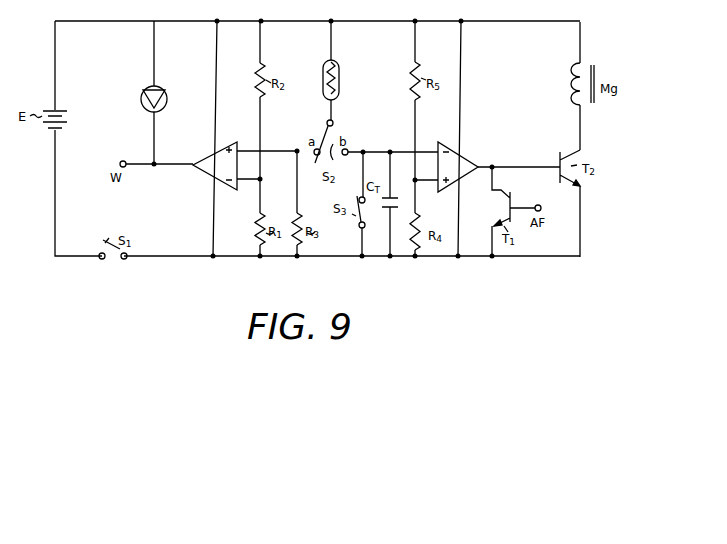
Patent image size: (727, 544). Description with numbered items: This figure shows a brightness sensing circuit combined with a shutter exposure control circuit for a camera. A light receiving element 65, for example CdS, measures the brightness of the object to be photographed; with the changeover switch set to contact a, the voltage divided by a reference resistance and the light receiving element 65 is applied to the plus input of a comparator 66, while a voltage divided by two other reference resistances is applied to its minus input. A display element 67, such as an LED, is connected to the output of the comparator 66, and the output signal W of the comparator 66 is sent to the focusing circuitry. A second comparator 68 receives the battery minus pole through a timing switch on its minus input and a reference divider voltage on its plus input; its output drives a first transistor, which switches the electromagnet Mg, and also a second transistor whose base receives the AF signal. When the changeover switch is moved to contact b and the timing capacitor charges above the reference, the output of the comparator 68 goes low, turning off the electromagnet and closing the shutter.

The light receiving element 65 is at (339, 75).
The comparator 66 is at (222, 145).
The display element 67 is at (169, 96).
The comparator 68 is at (463, 161).